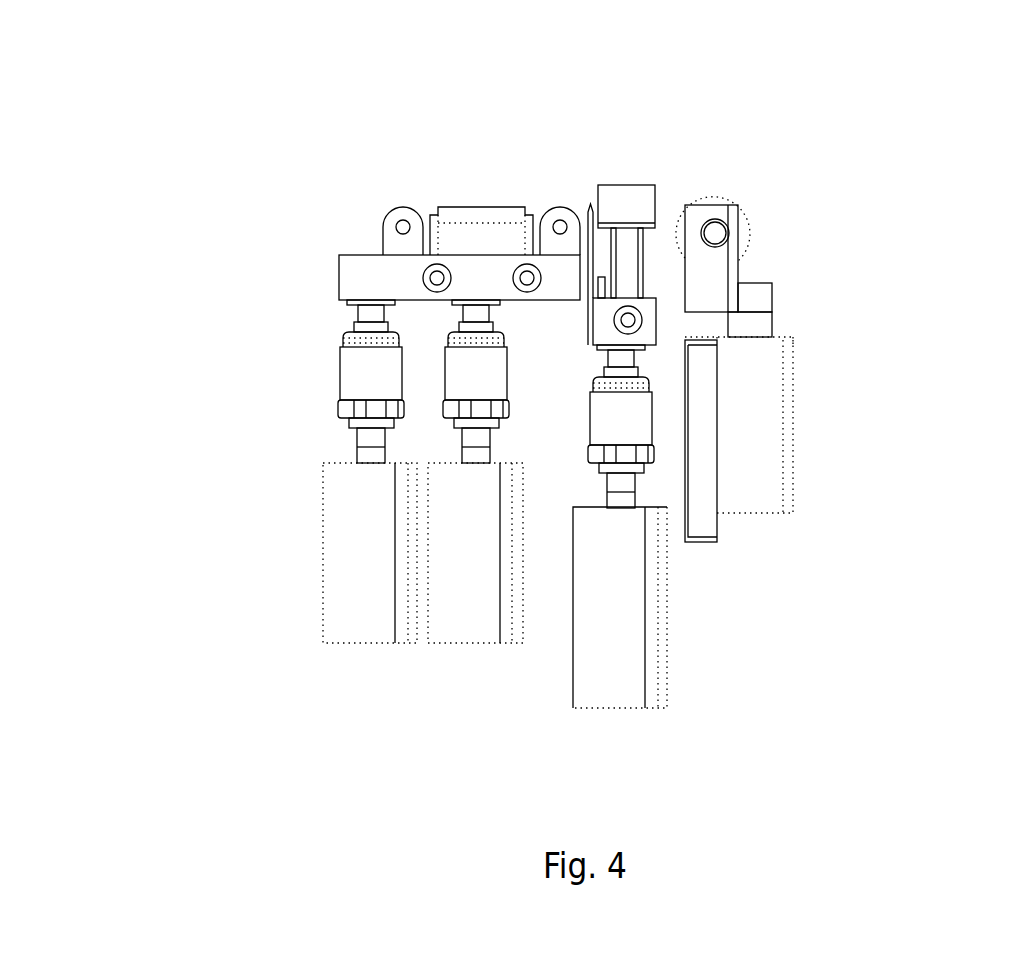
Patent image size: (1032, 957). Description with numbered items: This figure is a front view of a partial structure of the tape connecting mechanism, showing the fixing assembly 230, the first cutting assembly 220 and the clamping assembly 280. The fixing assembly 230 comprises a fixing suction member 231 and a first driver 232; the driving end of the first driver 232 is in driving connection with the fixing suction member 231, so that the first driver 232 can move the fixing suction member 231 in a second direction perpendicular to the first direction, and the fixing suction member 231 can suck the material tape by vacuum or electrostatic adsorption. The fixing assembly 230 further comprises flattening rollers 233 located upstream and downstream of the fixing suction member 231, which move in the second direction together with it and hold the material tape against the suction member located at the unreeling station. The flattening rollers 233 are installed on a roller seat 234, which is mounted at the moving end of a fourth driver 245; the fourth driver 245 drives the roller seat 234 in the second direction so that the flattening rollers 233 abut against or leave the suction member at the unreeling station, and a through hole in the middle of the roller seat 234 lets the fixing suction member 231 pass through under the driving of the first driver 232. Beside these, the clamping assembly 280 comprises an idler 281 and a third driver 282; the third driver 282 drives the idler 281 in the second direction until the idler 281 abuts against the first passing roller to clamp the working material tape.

The first cutting assembly 220 is at (625, 173).
The fixing assembly 230 is at (337, 317).
The fixing suction member 231 is at (480, 205).
The first driver 232 is at (465, 625).
The flattening rollers 233 is at (405, 212).
The roller seat 234 is at (367, 257).
The fourth driver 245 is at (358, 627).
The clamping assembly 280 is at (967, 273).
The idler 281 is at (753, 233).
The third driver 282 is at (773, 433).